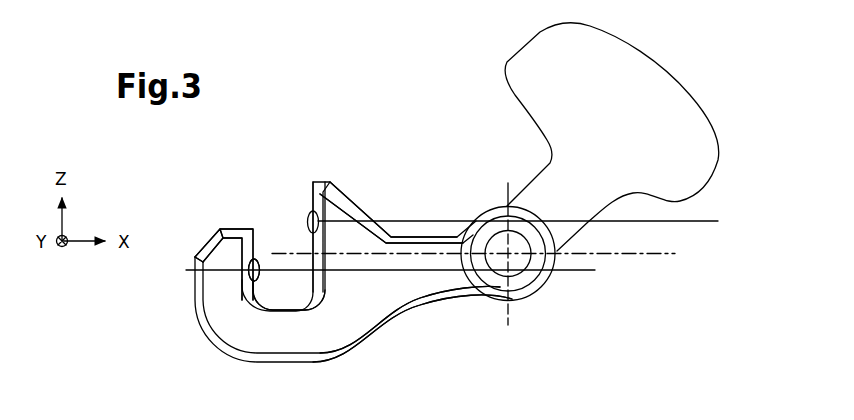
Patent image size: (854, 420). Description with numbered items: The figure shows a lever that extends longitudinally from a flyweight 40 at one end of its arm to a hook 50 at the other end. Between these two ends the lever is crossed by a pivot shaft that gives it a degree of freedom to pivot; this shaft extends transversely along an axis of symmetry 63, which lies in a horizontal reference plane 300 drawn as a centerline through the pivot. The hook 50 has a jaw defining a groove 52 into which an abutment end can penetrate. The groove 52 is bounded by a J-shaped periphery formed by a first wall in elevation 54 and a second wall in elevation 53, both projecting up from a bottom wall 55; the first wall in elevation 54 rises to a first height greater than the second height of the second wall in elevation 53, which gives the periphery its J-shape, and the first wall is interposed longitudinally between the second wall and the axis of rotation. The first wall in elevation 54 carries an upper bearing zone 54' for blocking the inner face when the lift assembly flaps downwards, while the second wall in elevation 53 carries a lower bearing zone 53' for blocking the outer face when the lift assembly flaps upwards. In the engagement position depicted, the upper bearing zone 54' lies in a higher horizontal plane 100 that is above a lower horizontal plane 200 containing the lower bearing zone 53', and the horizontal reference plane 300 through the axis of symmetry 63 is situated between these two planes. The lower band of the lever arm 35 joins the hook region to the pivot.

The lower band of bracket 35 is at (404, 332).
The flyweight 40 is at (652, 98).
The hook 50 is at (223, 347).
The groove 52 is at (279, 232).
The second wall in elevation 53 is at (219, 250).
The lower bearing zone 53' is at (193, 285).
The first wall in elevation 54 is at (374, 215).
The upper bearing zone 54' is at (391, 191).
The bottom wall 55 is at (290, 303).
The axis of symmetry 63 is at (506, 254).
The higher horizontal plane 100 is at (718, 221).
The lower horizontal plane 200 is at (587, 270).
The horizontal reference plane 300 is at (657, 254).